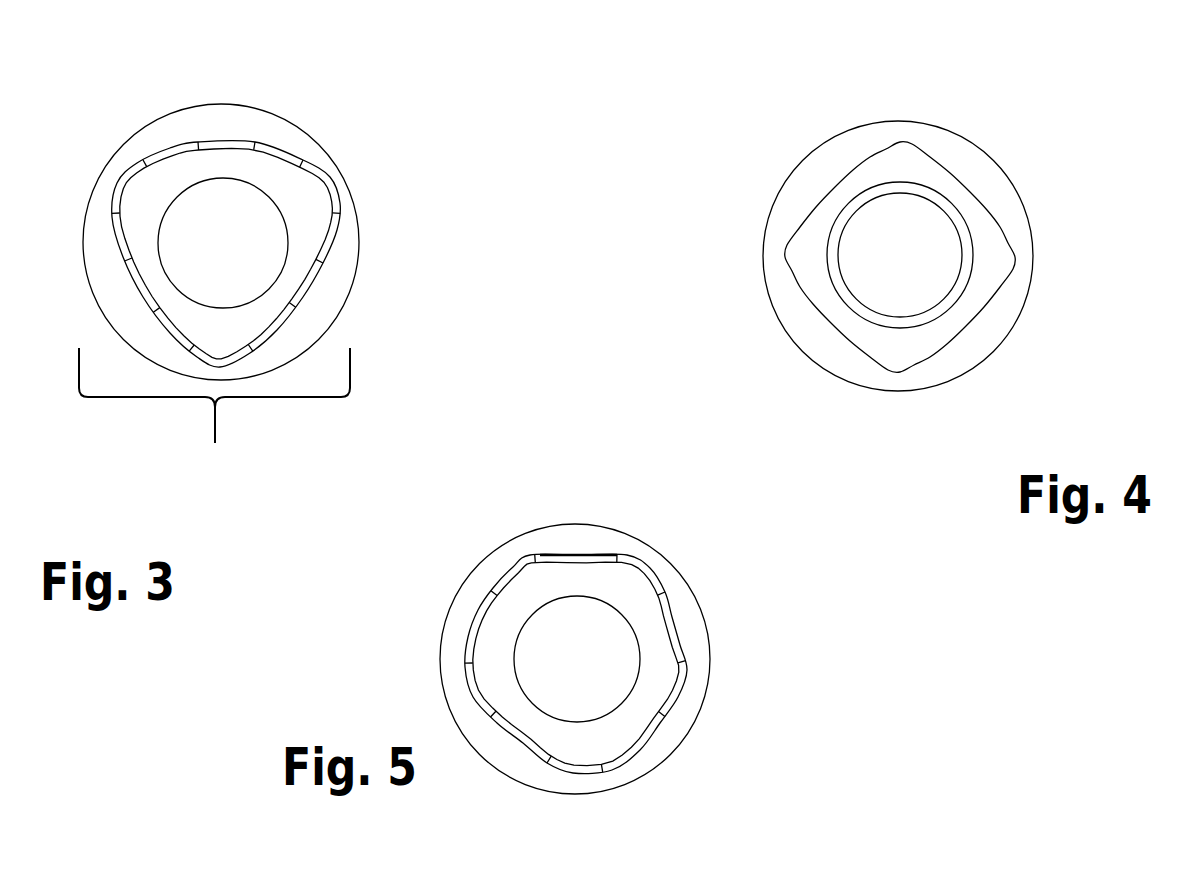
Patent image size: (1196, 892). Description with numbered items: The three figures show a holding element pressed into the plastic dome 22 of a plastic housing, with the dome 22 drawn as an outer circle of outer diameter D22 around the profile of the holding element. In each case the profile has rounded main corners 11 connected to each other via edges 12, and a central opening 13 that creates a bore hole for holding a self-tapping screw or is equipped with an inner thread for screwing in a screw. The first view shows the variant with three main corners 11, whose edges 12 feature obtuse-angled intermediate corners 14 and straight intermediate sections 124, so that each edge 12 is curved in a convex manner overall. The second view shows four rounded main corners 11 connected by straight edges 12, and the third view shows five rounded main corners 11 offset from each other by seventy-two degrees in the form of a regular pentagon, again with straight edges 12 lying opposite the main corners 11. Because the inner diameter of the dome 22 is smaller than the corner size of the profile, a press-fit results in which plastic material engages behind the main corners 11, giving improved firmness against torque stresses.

In FIG. 3, the main corners 11 is at (330, 183).
In FIG. 4, the main corners 11 is at (1013, 248).
In FIG. 5, the main corners 11 is at (643, 563).
In FIG. 3, the edges 12 is at (253, 353).
In FIG. 4, the edges 12 is at (970, 195).
In FIG. 5, the edges 12 is at (678, 628).
In FIG. 3, the opening 13 is at (165, 217).
In FIG. 4, the opening 13 is at (848, 227).
In FIG. 5, the opening 13 is at (535, 620).
In FIG. 3, the intermediate corners 14 is at (320, 272).
In FIG. 3, the straight intermediate sections 124 is at (330, 237).
In FIG. 4, the plastic dome 22 is at (850, 360).
In FIG. 5, the plastic dome 22 is at (655, 760).
In FIG. 3, the outer diameter D22 is at (214, 423).